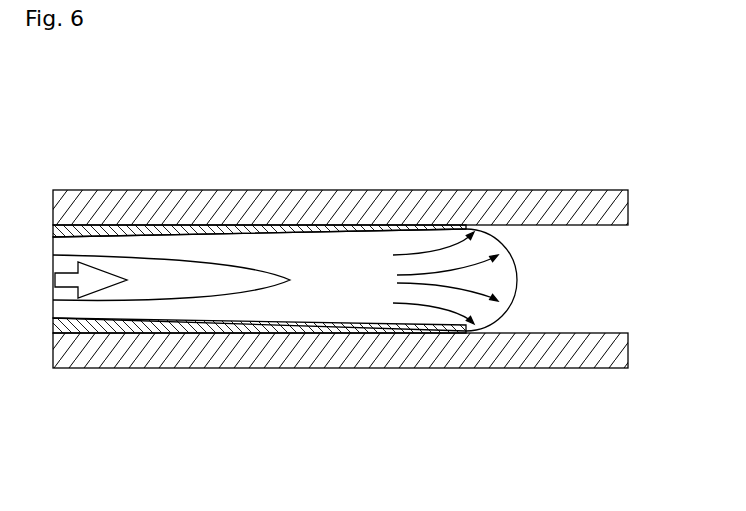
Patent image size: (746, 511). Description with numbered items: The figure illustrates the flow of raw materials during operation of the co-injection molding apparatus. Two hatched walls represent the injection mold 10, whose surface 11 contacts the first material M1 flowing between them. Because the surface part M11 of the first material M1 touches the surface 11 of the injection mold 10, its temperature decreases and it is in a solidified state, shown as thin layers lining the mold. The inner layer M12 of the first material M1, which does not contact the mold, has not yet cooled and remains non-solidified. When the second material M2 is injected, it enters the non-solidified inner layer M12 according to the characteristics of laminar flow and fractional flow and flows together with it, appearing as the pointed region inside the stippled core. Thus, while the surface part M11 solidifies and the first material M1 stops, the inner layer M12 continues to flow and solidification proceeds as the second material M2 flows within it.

The injection mold 10 is at (340, 273).
The surface of the injection mold 11 is at (112, 203).
The first material M1 is at (285, 304).
The surface part of the first material M11 is at (118, 323).
The inner layer of the first material M12 is at (288, 306).
The second material M2 is at (178, 278).